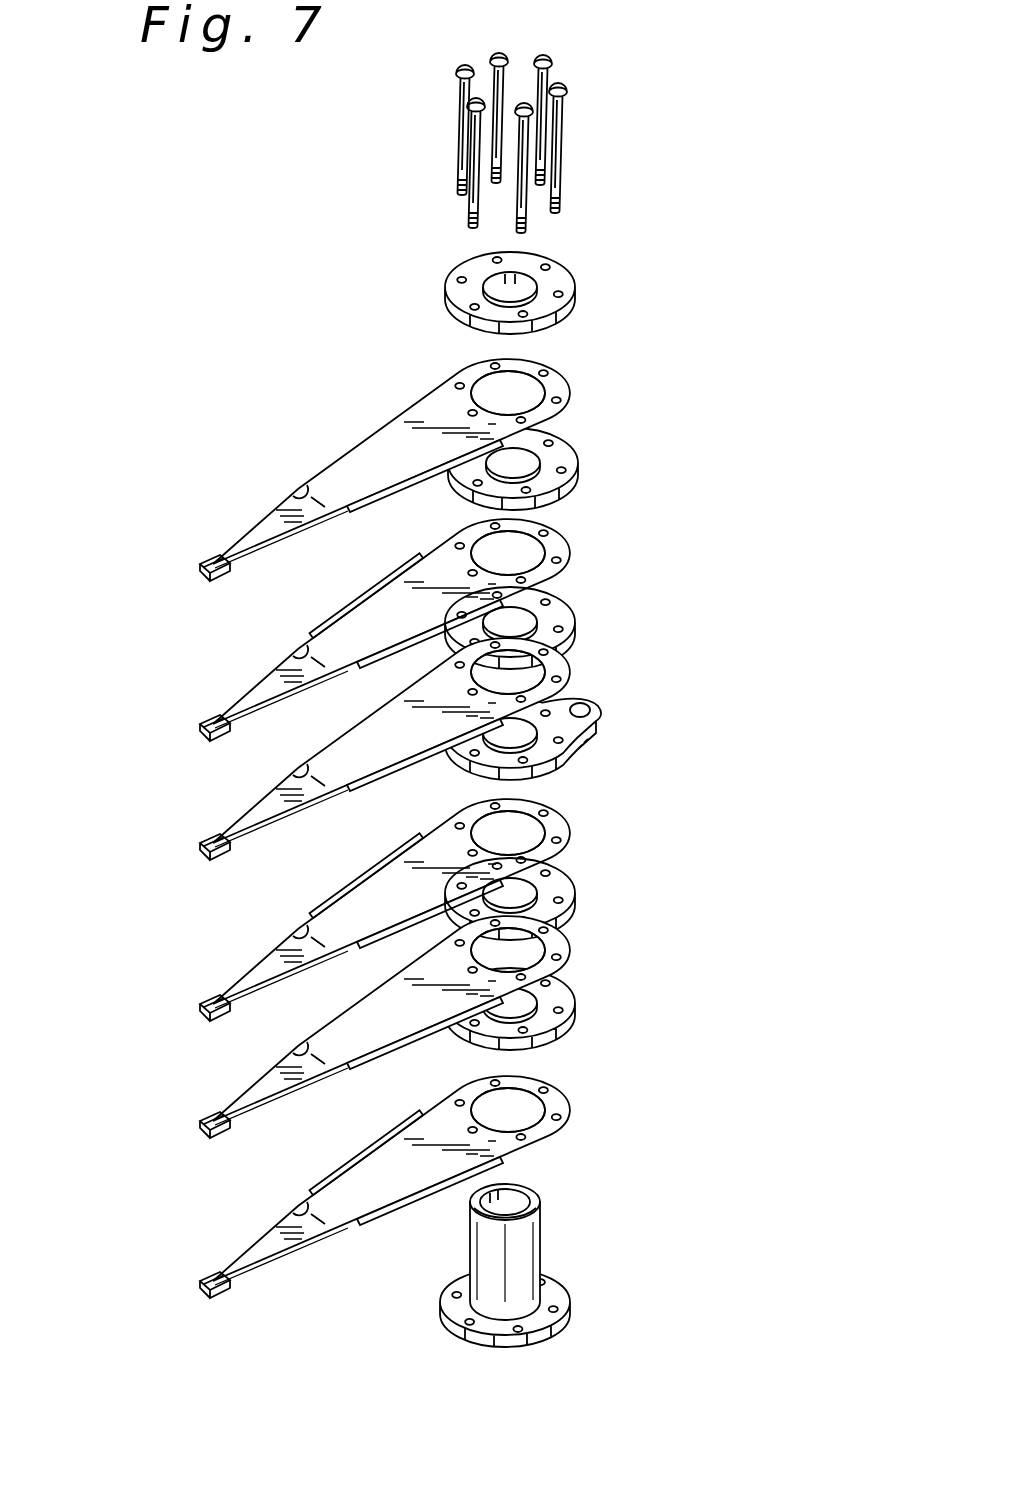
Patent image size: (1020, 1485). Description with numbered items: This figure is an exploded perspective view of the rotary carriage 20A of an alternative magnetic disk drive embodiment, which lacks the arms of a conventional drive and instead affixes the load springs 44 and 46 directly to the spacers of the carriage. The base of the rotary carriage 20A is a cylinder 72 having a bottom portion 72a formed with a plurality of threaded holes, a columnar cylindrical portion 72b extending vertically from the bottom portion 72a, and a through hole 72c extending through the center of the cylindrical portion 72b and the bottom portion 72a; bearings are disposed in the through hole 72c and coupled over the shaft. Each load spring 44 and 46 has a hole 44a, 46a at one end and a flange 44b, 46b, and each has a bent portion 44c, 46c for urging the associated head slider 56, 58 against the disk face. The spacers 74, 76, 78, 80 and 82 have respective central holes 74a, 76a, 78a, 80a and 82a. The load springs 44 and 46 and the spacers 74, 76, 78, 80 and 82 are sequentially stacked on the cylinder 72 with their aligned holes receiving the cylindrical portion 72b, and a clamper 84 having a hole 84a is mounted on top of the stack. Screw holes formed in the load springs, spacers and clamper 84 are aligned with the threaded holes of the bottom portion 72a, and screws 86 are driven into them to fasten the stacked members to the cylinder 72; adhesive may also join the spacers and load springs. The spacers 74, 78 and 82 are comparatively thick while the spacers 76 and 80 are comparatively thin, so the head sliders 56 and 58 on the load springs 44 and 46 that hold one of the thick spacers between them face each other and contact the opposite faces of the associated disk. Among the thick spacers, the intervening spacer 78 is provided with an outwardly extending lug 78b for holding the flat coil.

The rotary carriage 20A is at (262, 340).
The screws 86 is at (580, 143).
The clamper 84 is at (565, 268).
The hole 84a is at (520, 272).
The load spring 44 is at (324, 743).
The hole 44a is at (515, 385).
The flange 44b is at (402, 495).
The bent portion 44c is at (300, 492).
The head slider 56 is at (176, 858).
The spacer 74 is at (572, 453).
The hole 74a is at (527, 458).
The load spring 46 is at (326, 901).
The hole 46a is at (522, 550).
The flange 46b is at (337, 623).
The bent portion 46c is at (298, 655).
The head slider 58 is at (174, 1005).
The spacer 76 is at (568, 622).
The hole 76a is at (532, 616).
The spacer 78 is at (569, 733).
The hole 78a is at (552, 762).
The lug 78b is at (598, 728).
The spacer 80 is at (574, 888).
The hole 80a is at (532, 888).
The spacer 82 is at (568, 1008).
The hole 82a is at (532, 1000).
The cylinder 72 is at (529, 1265).
The bottom portion 72a is at (545, 1322).
The cylindrical portion 72b is at (487, 1262).
The through hole 72c is at (512, 1200).